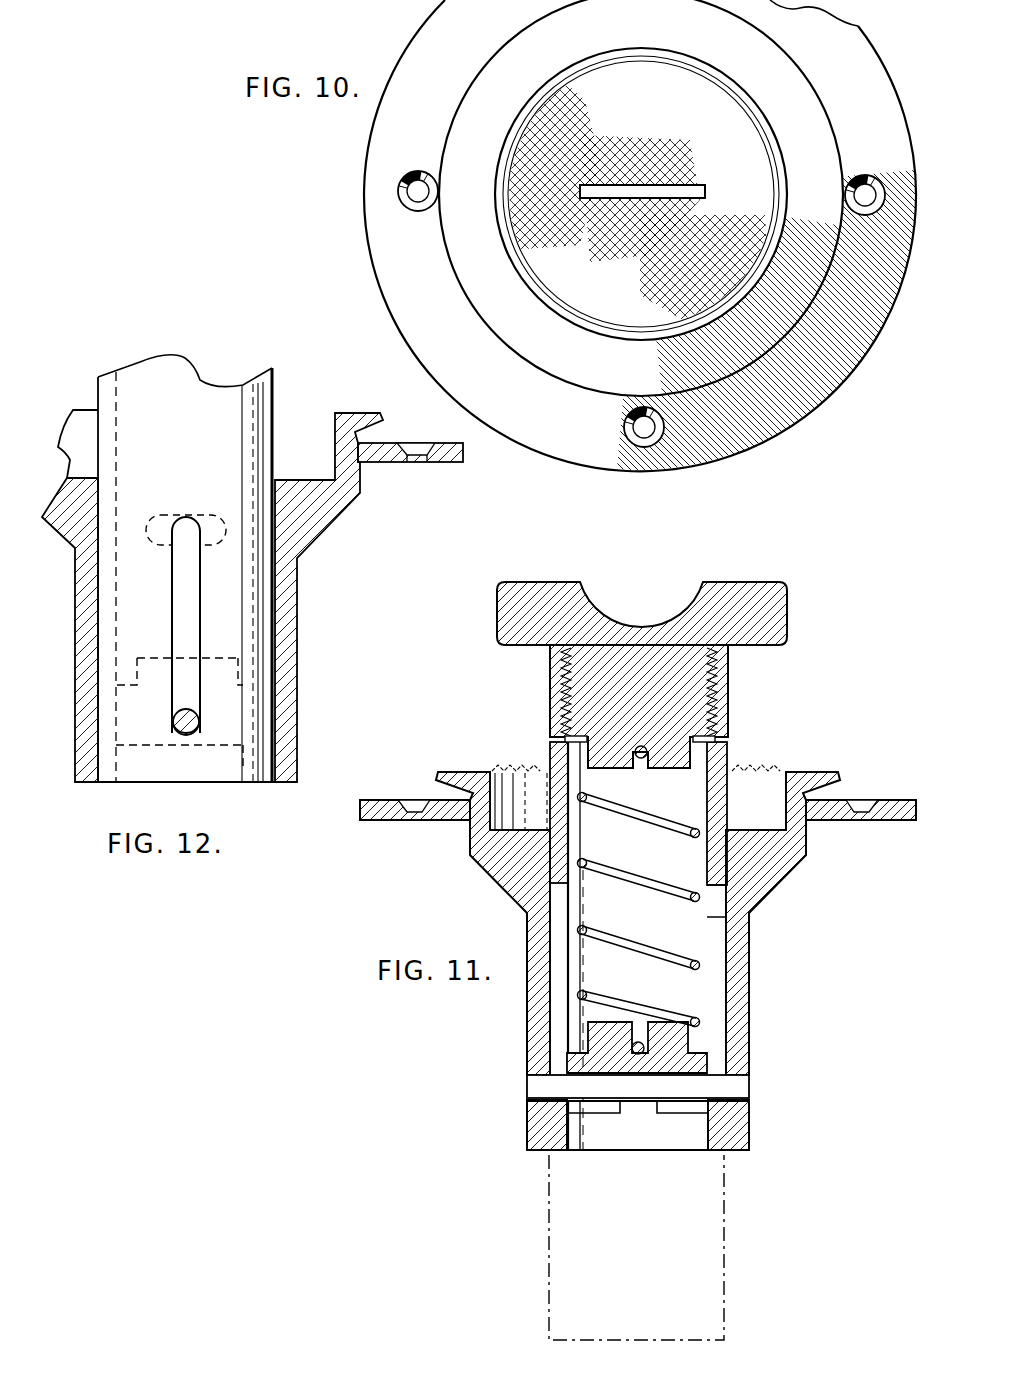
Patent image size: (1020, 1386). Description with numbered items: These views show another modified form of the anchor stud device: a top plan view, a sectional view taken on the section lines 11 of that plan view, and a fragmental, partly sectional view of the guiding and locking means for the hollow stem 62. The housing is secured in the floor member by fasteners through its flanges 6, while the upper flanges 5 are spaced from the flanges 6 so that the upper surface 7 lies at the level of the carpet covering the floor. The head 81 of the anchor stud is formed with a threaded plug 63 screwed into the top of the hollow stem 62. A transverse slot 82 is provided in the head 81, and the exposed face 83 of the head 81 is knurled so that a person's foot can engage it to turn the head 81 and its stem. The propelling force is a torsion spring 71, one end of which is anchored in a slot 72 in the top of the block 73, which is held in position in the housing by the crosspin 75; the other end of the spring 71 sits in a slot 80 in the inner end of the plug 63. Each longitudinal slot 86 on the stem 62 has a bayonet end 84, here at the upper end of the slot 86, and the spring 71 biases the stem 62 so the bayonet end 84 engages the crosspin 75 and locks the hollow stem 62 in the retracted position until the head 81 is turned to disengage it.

In FIG. 10, the upper flanges 5 is at (811, 99).
In FIG. 12, the upper flanges 5 is at (385, 419).
In FIG. 11, the upper flanges 5 is at (846, 791).
In FIG. 10, the flanges 6 is at (886, 80).
In FIG. 12, the flanges 6 is at (455, 447).
In FIG. 11, the flanges 6 is at (886, 812).
In FIG. 10, the upper surface 7 is at (786, 101).
In FIG. 12, the upper surface 7 is at (358, 421).
In FIG. 11, the upper surface 7 is at (812, 792).
In FIG. 10, the section lines 11— 11 is at (357, 187).
In FIG. 12, the hollow stem 62 is at (276, 392).
In FIG. 11, the hollow stem 62 is at (723, 749).
In FIG. 11, the threaded plug 63 is at (720, 702).
In FIG. 11, the torsion spring 71 is at (655, 953).
In FIG. 11, the slot 72 is at (638, 1040).
In FIG. 11, the block 73 is at (697, 1067).
In FIG. 11, the crosspin 75 is at (738, 1094).
In FIG. 11, the slot 80 is at (646, 763).
In FIG. 10, the head 81 is at (771, 148).
In FIG. 11, the head 81 is at (776, 627).
In FIG. 10, the transverse slot 82 is at (694, 181).
In FIG. 11, the transverse slot 82 is at (673, 598).
In FIG. 10, the exposed face 83 is at (700, 129).
In FIG. 11, the exposed face 83 is at (560, 569).
In FIG. 12, the bayonet end 84 is at (204, 528).
In FIG. 11, the bayonet end 84 is at (719, 899).
In FIG. 12, the slot 86 is at (195, 610).
In FIG. 11, the slot 86 is at (557, 937).